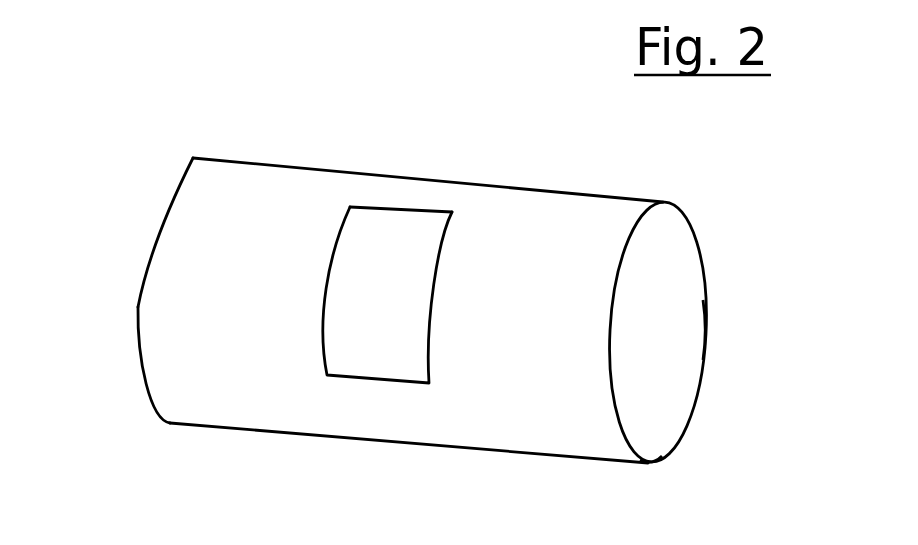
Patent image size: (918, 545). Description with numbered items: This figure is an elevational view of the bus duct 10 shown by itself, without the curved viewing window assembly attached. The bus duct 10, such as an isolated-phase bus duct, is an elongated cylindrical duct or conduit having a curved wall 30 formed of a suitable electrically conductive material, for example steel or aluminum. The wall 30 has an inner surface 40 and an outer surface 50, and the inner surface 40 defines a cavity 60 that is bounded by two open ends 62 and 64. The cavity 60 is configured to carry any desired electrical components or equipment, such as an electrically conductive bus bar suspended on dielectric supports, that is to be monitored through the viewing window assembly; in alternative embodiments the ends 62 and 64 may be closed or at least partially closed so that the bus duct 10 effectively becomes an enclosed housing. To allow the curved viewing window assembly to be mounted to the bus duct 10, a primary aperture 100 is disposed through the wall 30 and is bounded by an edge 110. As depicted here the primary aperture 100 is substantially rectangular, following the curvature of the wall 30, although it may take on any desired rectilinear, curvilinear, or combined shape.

The bus duct 10 is at (505, 183).
The curved wall 30 is at (413, 465).
The inner surface 40 is at (742, 421).
The outer surface 50 is at (190, 189).
The cavity 60 is at (668, 258).
The open end 62 is at (92, 299).
The open end 64 is at (707, 331).
The primary aperture 100 is at (350, 368).
The edge 110 is at (365, 159).